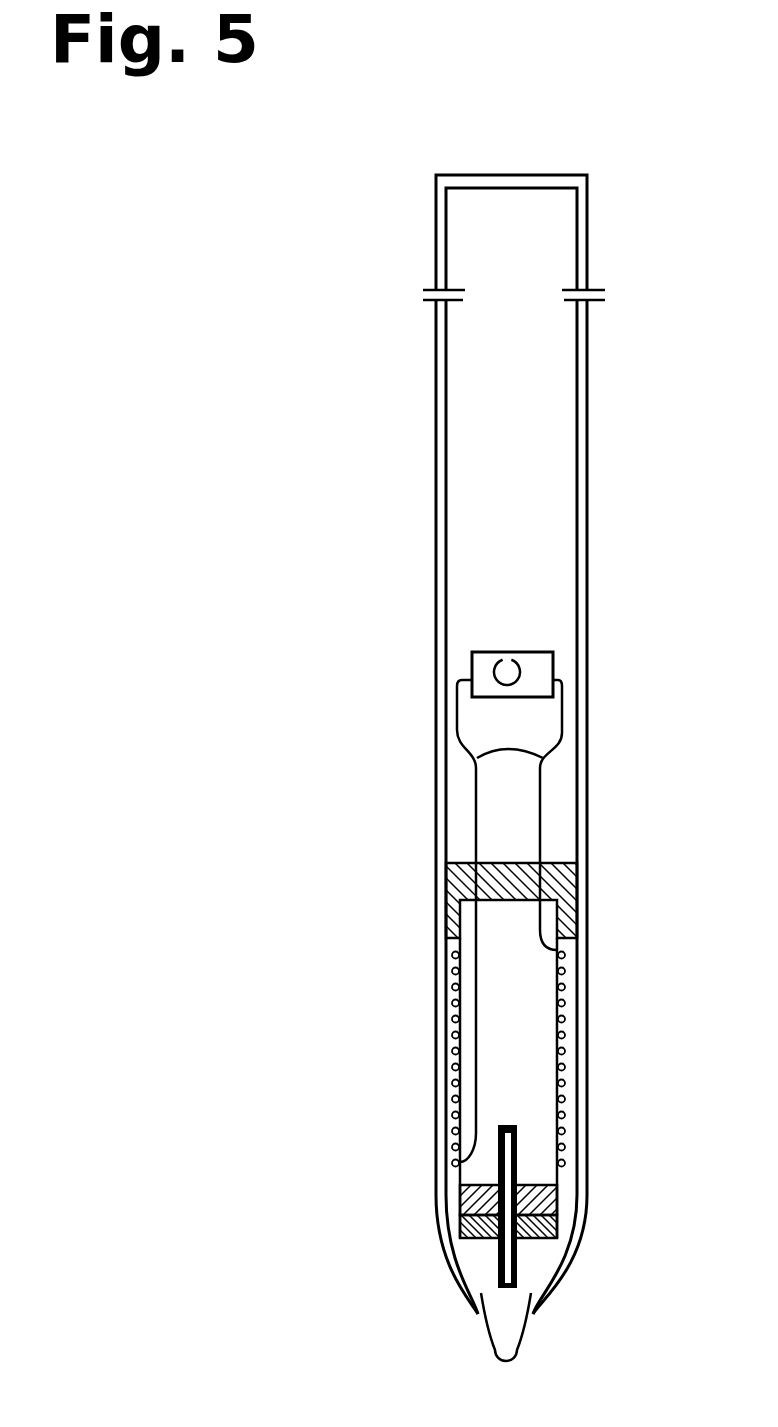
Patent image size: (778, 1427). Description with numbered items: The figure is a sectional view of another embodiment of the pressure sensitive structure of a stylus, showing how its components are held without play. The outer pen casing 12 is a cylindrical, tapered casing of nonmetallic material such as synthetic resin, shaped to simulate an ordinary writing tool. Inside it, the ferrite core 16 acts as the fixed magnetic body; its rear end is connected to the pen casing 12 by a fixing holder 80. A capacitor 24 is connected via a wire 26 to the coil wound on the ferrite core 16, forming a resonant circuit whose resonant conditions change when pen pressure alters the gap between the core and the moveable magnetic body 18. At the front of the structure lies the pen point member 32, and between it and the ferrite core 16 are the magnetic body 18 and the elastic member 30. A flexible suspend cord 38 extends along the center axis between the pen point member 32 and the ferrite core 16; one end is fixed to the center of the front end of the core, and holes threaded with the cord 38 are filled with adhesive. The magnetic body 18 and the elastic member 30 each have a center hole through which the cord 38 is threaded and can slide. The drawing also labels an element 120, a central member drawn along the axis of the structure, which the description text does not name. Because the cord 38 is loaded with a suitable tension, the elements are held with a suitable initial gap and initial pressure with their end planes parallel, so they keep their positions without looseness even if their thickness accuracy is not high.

The pen casing 12 is at (437, 450).
The ferrite core 16 is at (522, 1018).
The magnetic body 18 is at (553, 1228).
The capacitor 24 is at (535, 668).
The wire 26 is at (533, 753).
The elastic member 30 is at (543, 1202).
The pen point member 32 is at (512, 1313).
The suspend cord 38 is at (517, 1258).
The fixing holder 80 is at (562, 880).
The electrode 120 is at (498, 1128).